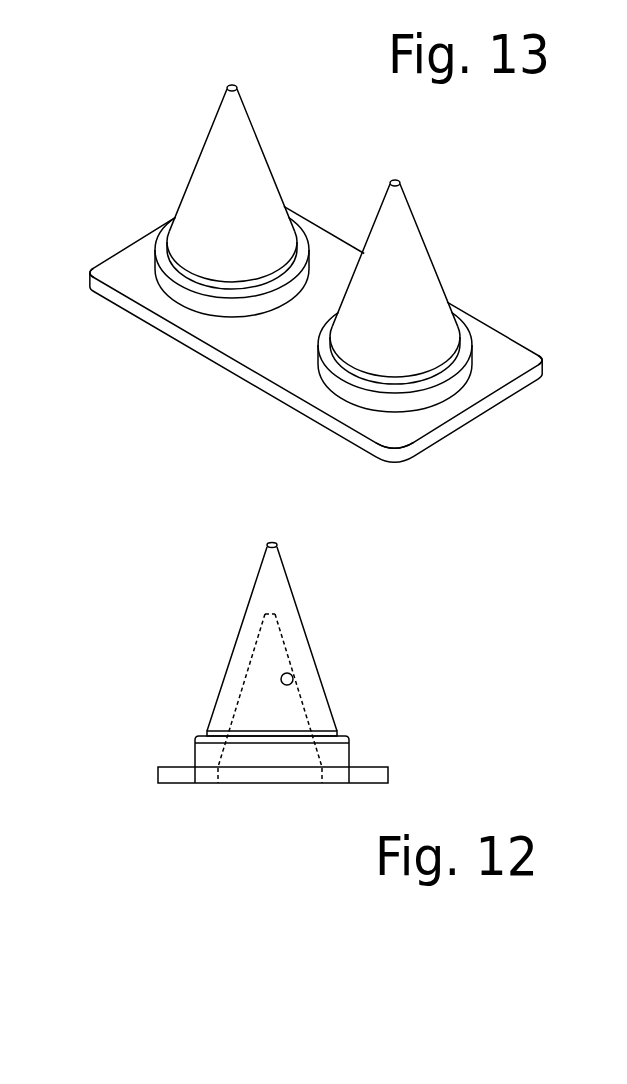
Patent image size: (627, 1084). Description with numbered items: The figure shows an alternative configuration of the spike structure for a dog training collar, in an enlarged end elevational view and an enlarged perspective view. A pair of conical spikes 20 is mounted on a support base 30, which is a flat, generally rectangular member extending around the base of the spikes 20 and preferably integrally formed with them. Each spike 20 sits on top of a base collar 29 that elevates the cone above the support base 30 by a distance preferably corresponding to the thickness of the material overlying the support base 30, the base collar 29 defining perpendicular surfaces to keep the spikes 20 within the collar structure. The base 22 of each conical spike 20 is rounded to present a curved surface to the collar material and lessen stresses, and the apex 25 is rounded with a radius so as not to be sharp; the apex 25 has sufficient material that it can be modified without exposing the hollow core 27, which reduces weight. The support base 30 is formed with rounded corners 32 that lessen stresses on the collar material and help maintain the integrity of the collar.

In FIG. 13, the spike 20 is at (402, 263).
In FIG. 12, the spike 20 is at (252, 632).
In FIG. 13, the base of the conical spike 22 is at (157, 275).
In FIG. 12, the base of the conical spike 22 is at (345, 734).
In FIG. 13, the apex 25 is at (239, 89).
In FIG. 12, the apex 25 is at (275, 543).
In FIG. 12, the hollow core 27 is at (293, 675).
In FIG. 13, the base collar 29 is at (343, 390).
In FIG. 12, the base collar 29 is at (213, 755).
In FIG. 13, the support base 30 is at (437, 413).
In FIG. 12, the support base 30 is at (237, 773).
In FIG. 13, the rounded corners 32 is at (89, 272).